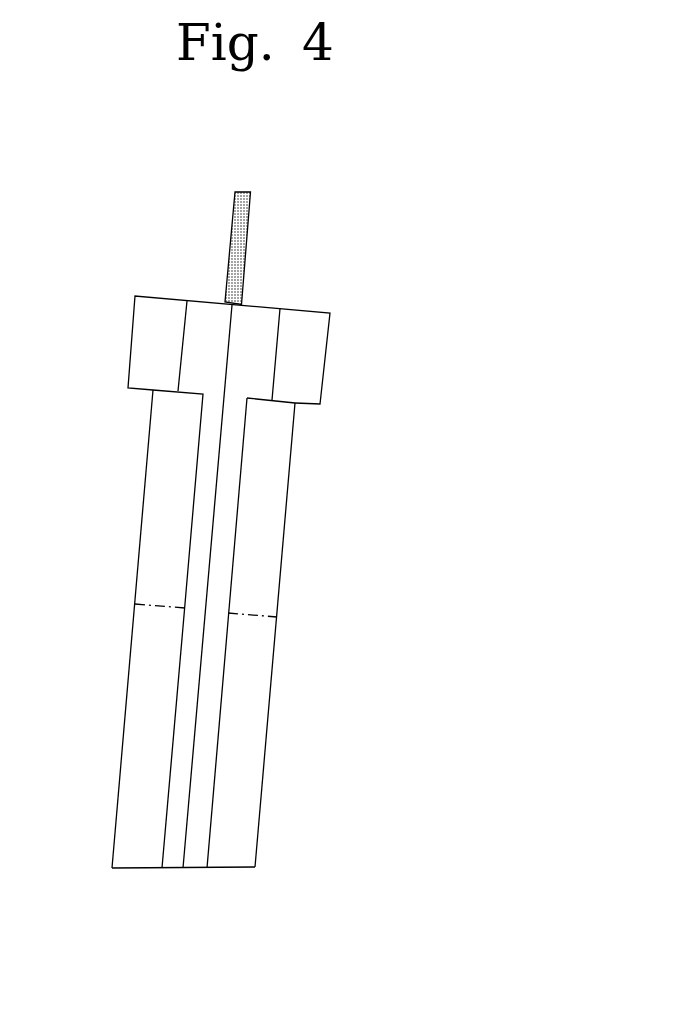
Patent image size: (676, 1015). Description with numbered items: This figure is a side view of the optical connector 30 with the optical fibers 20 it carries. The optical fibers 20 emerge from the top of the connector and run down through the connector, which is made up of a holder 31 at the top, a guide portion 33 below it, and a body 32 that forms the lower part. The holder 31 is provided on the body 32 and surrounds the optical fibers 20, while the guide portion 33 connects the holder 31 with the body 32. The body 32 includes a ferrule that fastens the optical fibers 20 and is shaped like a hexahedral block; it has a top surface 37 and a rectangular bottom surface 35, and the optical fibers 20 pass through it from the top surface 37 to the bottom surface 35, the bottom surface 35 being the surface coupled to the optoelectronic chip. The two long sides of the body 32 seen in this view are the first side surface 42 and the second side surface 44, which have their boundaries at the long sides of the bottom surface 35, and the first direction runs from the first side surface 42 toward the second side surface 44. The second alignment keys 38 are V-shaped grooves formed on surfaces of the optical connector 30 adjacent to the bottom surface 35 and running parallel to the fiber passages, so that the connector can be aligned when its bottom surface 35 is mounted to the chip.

The optical fibers 20 is at (243, 227).
The optical connector 30 is at (241, 594).
The holder 31 is at (298, 360).
The body 32 is at (247, 760).
The guide portion 33 is at (270, 538).
The bottom surface 35 is at (230, 868).
The top surface 37 is at (252, 615).
The second alignment keys 38 is at (201, 680).
The first side surface 42 is at (125, 722).
The second side surface 44 is at (268, 710).